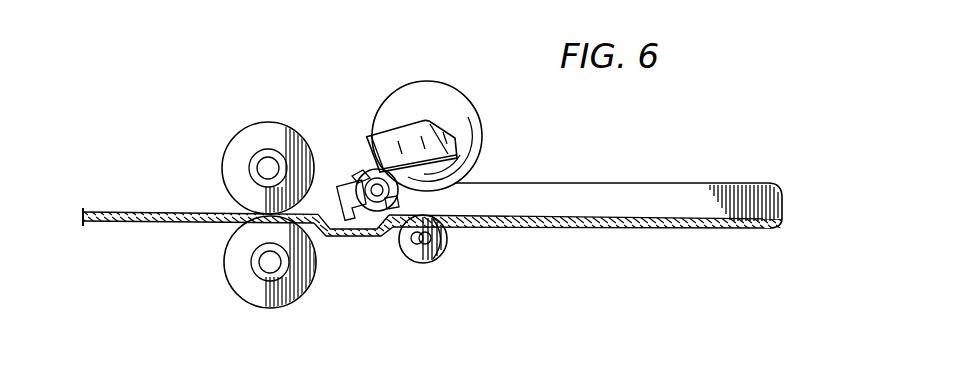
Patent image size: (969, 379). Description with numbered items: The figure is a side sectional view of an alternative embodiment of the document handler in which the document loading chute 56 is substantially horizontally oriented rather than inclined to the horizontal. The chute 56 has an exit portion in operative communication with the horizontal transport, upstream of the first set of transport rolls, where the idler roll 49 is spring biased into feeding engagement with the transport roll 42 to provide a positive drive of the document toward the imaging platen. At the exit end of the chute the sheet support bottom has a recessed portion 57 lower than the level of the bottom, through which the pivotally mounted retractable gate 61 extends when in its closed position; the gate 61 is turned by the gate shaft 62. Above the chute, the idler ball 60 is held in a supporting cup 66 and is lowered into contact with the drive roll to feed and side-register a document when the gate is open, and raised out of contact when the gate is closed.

The transport roll 42 is at (263, 295).
The idler roll 49 is at (258, 140).
The document loading chute 56 is at (643, 222).
The recessed portion 57 is at (383, 234).
The idler ball 60 is at (458, 120).
The retractable gate 61 is at (345, 185).
The gate shaft 62 is at (362, 229).
The supporting cup 66 is at (382, 135).